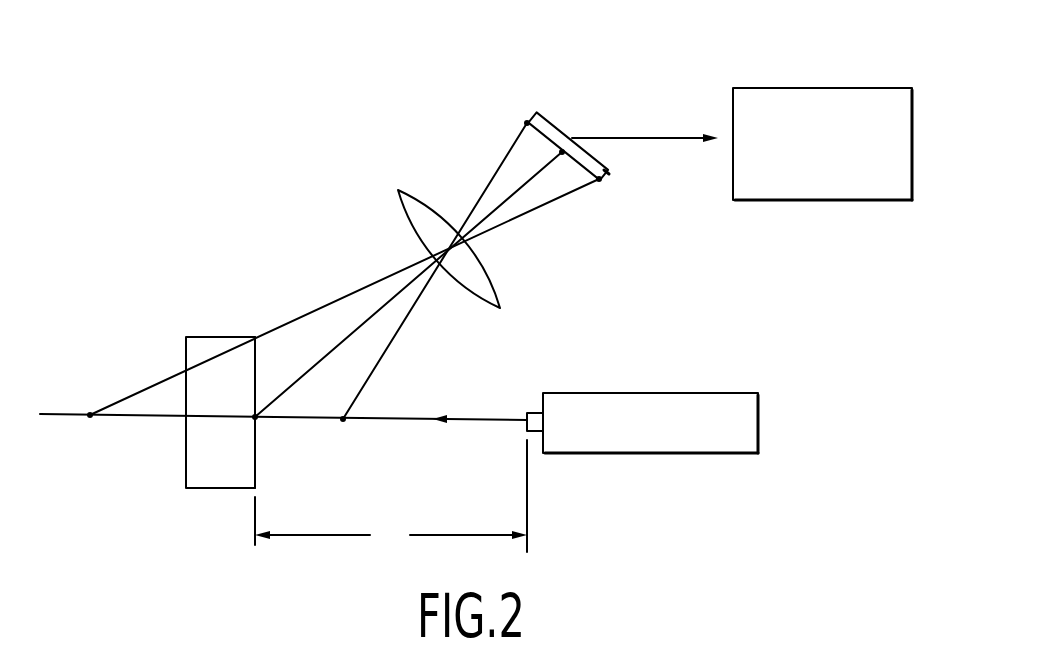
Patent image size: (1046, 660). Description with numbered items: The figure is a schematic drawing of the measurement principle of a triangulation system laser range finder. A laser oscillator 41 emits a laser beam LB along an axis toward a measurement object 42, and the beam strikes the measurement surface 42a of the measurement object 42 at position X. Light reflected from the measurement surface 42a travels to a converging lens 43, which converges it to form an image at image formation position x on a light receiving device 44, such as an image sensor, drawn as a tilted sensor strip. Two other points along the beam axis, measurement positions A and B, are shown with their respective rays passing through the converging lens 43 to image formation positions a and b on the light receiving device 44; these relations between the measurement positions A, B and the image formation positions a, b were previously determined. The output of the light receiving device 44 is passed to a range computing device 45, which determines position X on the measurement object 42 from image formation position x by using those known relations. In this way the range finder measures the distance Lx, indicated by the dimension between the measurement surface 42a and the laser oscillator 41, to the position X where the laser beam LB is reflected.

The laser oscillator 41 is at (663, 393).
The measurement object 42 is at (204, 489).
The measurement surface 42a is at (257, 462).
The converging lens 43 is at (395, 208).
The light receiving device 44 is at (553, 114).
The range computing device 45 is at (825, 88).
The laser beam LB is at (283, 442).
The distance to position X Lx is at (391, 496).
The measurement position A is at (344, 418).
The measurement position B is at (90, 414).
The position X is at (256, 416).
The image formation position a is at (526, 123).
The image formation position b is at (600, 180).
The image formation position x is at (563, 153).